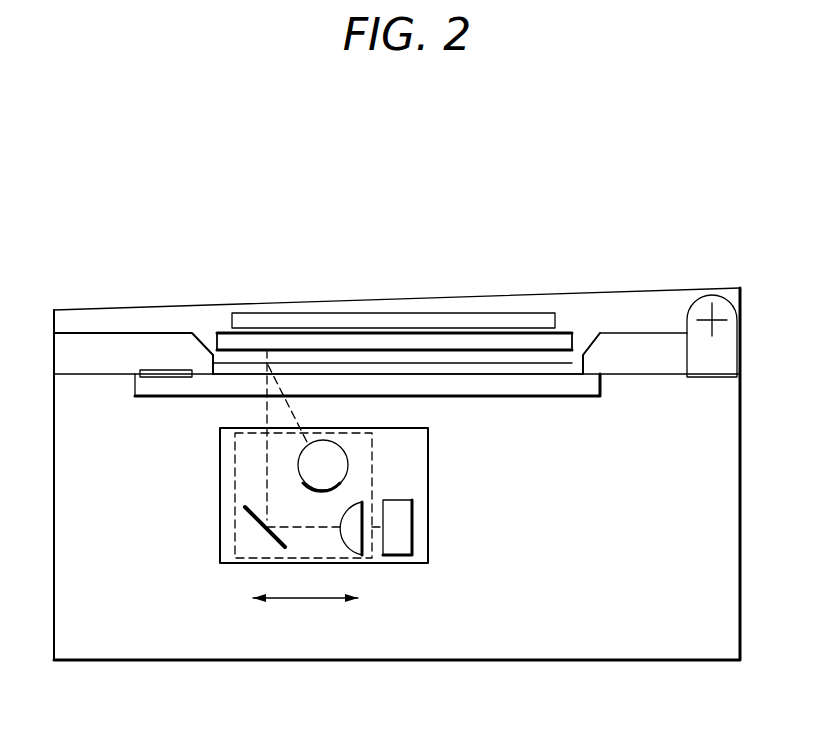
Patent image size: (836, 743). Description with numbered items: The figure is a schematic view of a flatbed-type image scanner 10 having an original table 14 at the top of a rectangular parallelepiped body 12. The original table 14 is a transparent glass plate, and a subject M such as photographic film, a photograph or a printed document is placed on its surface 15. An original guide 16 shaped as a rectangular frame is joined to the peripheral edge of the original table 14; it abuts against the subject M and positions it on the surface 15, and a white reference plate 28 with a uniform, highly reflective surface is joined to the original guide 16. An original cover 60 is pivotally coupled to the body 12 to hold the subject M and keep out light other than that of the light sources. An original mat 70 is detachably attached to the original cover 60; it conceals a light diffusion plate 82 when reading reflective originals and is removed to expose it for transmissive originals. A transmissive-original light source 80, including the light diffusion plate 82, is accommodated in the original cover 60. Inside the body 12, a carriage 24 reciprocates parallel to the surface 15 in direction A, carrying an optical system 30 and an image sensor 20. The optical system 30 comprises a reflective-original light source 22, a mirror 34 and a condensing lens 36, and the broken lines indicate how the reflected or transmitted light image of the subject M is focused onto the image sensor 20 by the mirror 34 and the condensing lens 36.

The image scanner 10 is at (108, 186).
The body 12 is at (742, 556).
The original table 14 is at (600, 386).
The surface 15 is at (465, 373).
The original guide 16 is at (627, 345).
The image sensor 20 is at (400, 542).
The reflective-original light source 22 is at (326, 452).
The carriage 24 is at (237, 565).
The white reference plate 28 is at (167, 370).
The optical system 30 is at (235, 492).
The mirror 34 is at (255, 517).
The condensing lens 36 is at (353, 542).
The original cover 60 is at (200, 303).
The original mat 70 is at (322, 342).
The transmissive-original light source 80 is at (446, 300).
The light diffusion plate 82 is at (280, 322).
The subject M is at (517, 363).
The direction A is at (305, 613).